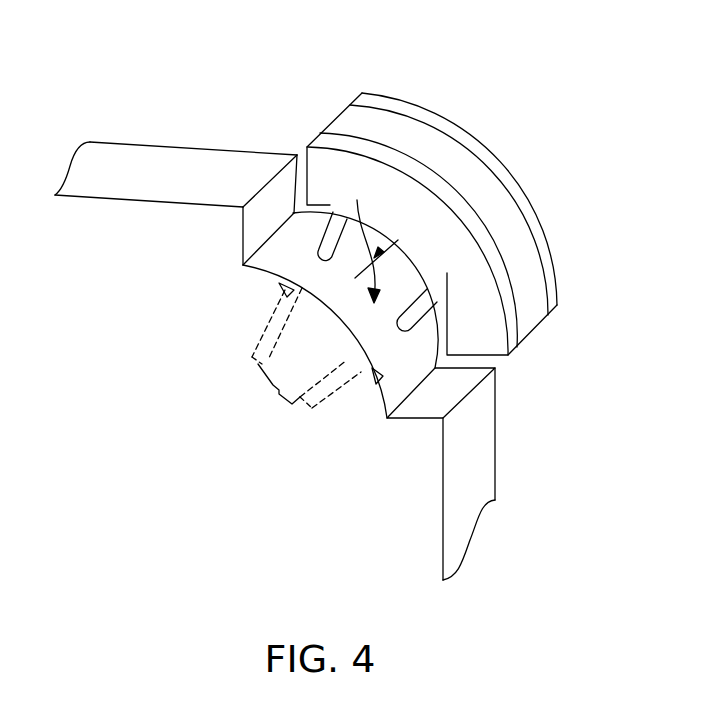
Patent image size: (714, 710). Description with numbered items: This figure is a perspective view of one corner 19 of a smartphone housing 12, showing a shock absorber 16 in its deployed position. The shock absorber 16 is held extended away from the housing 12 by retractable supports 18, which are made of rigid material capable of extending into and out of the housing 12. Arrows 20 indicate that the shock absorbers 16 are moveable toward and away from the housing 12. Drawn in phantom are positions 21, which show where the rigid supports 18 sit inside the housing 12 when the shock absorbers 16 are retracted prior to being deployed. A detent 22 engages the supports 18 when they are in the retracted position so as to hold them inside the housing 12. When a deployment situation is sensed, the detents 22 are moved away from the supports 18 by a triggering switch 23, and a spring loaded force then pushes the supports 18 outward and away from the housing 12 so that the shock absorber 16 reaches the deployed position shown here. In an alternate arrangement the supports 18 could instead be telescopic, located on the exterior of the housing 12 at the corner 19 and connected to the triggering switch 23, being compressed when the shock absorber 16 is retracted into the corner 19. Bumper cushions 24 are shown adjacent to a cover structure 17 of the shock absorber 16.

The smartphone housing 12 is at (126, 158).
The shock absorber 16 is at (402, 238).
The cover structure 17 is at (533, 267).
The retractable supports 18 is at (333, 243).
The corner 19 is at (214, 442).
The arrows 20 is at (371, 241).
The positions 21 is at (305, 365).
The detent 22 is at (277, 298).
The triggering switch 23 is at (278, 284).
The bumper cushions 24 is at (533, 220).